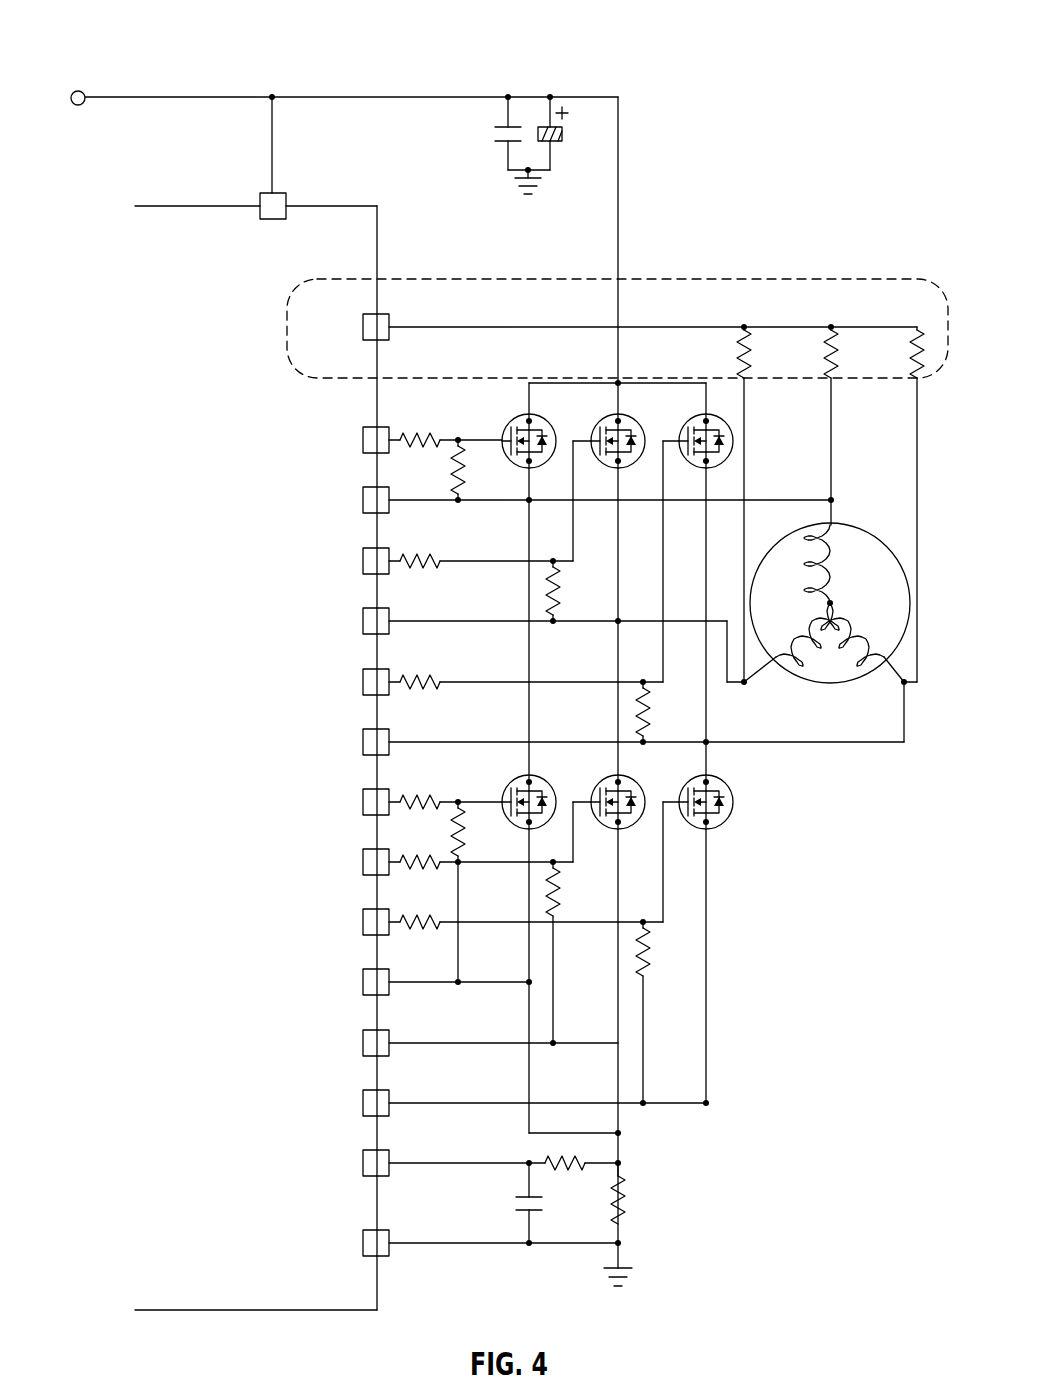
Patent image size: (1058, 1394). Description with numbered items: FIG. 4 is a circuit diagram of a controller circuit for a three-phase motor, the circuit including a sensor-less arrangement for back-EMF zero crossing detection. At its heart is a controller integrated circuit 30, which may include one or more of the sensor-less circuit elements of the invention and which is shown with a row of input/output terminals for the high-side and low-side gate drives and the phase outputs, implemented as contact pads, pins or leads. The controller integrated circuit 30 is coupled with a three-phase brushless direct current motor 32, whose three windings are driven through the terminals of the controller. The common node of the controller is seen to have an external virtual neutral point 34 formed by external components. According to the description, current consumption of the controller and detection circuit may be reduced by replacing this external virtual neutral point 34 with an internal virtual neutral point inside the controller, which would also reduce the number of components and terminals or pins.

The controller integrated circuit 30 is at (754, 43).
The three-phase brushless direct current motor 32 is at (830, 683).
The external virtual neutral point 34 is at (766, 279).